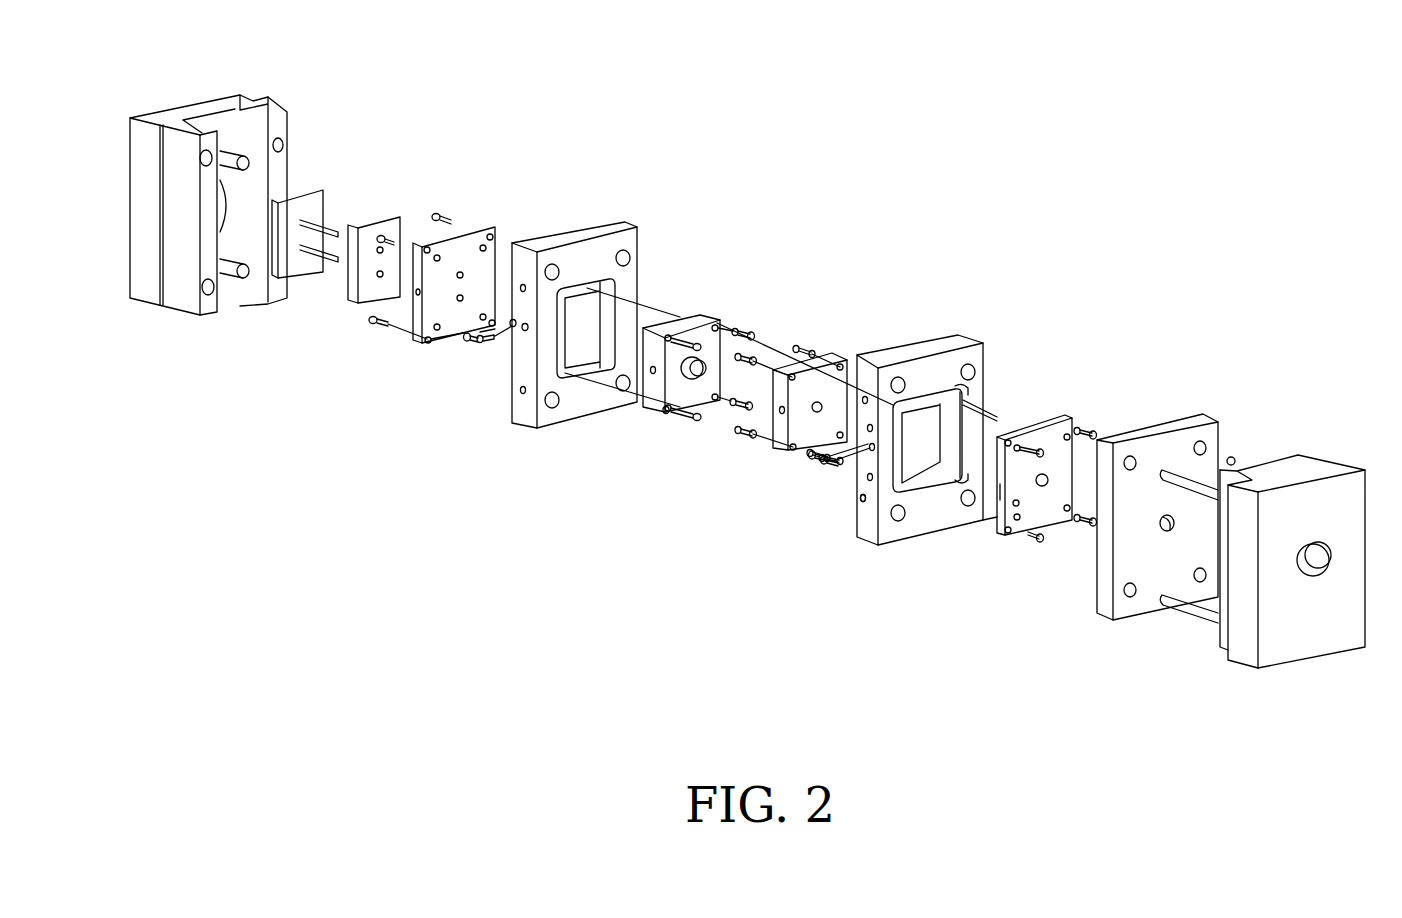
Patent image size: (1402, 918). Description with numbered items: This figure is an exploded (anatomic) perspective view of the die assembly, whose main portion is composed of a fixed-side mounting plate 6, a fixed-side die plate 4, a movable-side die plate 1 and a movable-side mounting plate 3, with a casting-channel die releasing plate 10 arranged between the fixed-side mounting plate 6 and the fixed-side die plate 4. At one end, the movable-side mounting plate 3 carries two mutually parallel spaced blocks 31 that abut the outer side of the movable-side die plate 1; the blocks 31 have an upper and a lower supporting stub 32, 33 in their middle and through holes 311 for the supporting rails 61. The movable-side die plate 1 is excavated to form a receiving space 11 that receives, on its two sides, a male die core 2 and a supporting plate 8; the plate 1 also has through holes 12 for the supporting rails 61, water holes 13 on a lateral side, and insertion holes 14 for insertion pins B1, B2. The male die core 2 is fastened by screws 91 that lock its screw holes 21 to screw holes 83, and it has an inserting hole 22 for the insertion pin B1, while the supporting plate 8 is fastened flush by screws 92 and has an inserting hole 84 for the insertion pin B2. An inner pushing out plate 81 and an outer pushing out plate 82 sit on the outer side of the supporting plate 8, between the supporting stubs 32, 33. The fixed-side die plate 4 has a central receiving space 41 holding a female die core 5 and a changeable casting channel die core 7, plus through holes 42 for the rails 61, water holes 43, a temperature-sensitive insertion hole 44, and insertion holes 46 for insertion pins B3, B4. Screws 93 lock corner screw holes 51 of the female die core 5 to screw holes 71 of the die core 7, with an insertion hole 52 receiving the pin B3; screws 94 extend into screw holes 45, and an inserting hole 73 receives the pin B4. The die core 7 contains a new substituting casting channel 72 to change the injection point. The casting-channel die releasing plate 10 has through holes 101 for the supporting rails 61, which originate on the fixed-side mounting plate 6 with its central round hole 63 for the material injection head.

The movable-side die plate 1 is at (595, 220).
The male die core 2 is at (710, 318).
The movable-side mounting plate 3 is at (130, 150).
The fixed-side die plate 4 is at (915, 352).
The female die core 5 is at (815, 355).
The fixed-side mounting plate 6 is at (1313, 470).
The changeable casting channel die core 7 is at (1060, 420).
The supporting plate 8 is at (485, 232).
The casting-channel die releasing plate 10 is at (1178, 418).
The receiving space 11 is at (572, 360).
The through holes 12 is at (553, 408).
The water holes 13 is at (523, 395).
The insertion holes 14 is at (525, 330).
The screw holes 21 is at (664, 415).
The inserting hole 22 is at (650, 375).
The spaced blocks 31 is at (287, 115).
The upper supporting stub 32 is at (240, 158).
The lower supporting stub 33 is at (222, 268).
The receiving space 41 is at (900, 496).
The through holes 42 is at (872, 530).
The water holes 43 is at (863, 498).
The temperature-sensitive insertion hole 44 is at (872, 477).
The screw holes 45 is at (898, 516).
The insertion holes 46 is at (870, 446).
The corner screw holes 51 is at (793, 445).
The insertion hole 52 is at (780, 408).
The supporting rails 61 is at (1240, 462).
The central round hole 63 is at (1313, 576).
The screw holes 71 is at (1015, 523).
The new substituting casting channel 72 is at (1043, 487).
The inserting hole 73 is at (1000, 485).
The inner pushing out plate 81 is at (385, 218).
The outer pushing out plate 82 is at (312, 205).
The screw holes 83 is at (428, 343).
The inserting hole 84 is at (383, 300).
The screws 91 is at (698, 420).
The screws 92 is at (373, 324).
The screws 93 is at (737, 434).
The screws 94 is at (1028, 540).
The through holes 101 is at (1131, 597).
The through holes 311 is at (285, 147).
The insertion pin B1 is at (467, 342).
The insertion pin B2 is at (466, 342).
The insertion pin B3 is at (810, 456).
The insertion pin B4 is at (826, 460).